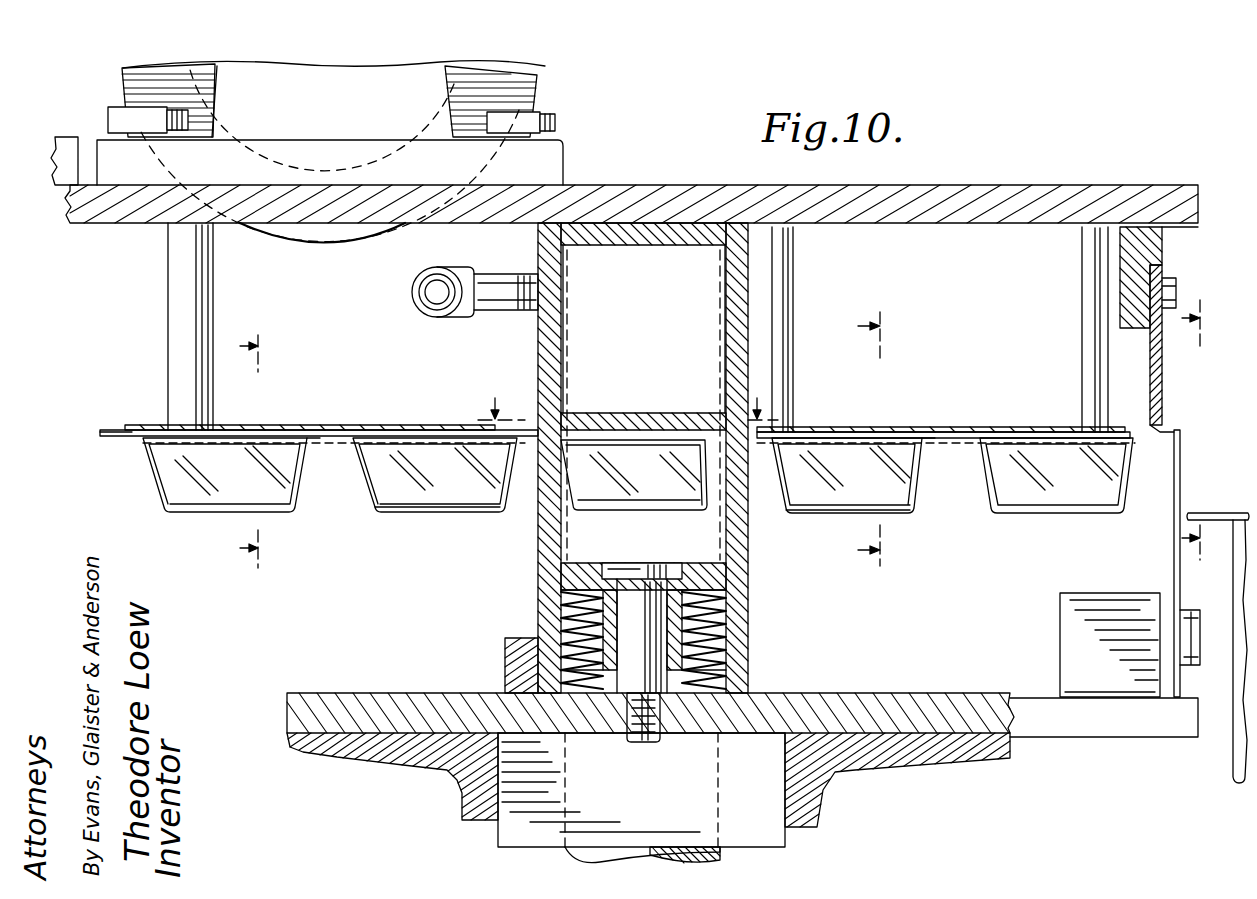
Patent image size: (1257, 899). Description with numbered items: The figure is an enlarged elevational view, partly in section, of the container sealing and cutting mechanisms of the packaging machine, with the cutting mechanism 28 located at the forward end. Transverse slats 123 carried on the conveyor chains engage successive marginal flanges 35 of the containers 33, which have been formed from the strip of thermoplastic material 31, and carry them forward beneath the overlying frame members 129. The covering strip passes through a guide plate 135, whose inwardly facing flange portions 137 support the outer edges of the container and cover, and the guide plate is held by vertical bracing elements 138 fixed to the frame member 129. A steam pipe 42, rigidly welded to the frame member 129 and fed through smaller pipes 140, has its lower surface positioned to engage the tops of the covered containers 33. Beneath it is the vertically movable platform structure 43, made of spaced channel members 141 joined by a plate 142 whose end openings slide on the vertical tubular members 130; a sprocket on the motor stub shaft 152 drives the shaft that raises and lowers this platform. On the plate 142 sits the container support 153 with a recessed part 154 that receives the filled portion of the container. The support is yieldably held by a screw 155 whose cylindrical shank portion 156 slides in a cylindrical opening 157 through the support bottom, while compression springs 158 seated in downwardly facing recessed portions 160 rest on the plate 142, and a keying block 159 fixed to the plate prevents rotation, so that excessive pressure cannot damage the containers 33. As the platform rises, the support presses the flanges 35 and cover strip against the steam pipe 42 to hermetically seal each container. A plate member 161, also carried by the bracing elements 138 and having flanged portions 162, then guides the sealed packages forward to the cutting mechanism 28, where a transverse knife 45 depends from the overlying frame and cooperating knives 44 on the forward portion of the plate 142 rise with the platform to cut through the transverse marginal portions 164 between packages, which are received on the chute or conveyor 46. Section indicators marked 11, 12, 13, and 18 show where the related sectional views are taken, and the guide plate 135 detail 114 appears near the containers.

The transverse slats 123 is at (387, 113).
The laterally spaced frame members 129 is at (1028, 185).
The smaller pipes 140 is at (505, 278).
The vertical bracing elements 138 is at (214, 304).
The steam pipe 42 is at (538, 355).
The container support 153 is at (748, 568).
The recessed part 154 is at (725, 555).
The cylindrical opening 157 is at (595, 580).
The cylindrical shank portion 156 is at (604, 735).
The screw 155 is at (662, 742).
The recessed portions 160 is at (562, 700).
The compression springs 158 is at (735, 688).
The keying block 159 is at (505, 660).
The strip of thermoplastic material 31 is at (112, 428).
The marginal flanges 35 is at (104, 436).
The guide plate 135 is at (292, 424).
The containers 33 is at (222, 495).
The cup 114 is at (368, 490).
The inwardly facing flange portions 137 is at (320, 440).
The stub shaft 152 is at (870, 496).
The flanged portions 162 is at (952, 444).
The transverse marginal portions 164 is at (962, 431).
The plate member 161 is at (872, 414).
The transverse knife 45 is at (1163, 386).
The cutting mechanism 28 is at (1216, 427).
The cooperating knives 44 is at (1181, 484).
The chute or conveyor 46 is at (1232, 513).
The plate 142 is at (922, 693).
The platform structure 43 is at (448, 812).
The channel members 141 is at (830, 810).
The vertical tubular members 130 is at (722, 855).
The section line 11- 11 is at (264, 451).
The section line 12- 12 is at (628, 399).
The section line 13- 13 is at (884, 439).
The section line 18- 18 is at (1206, 430).